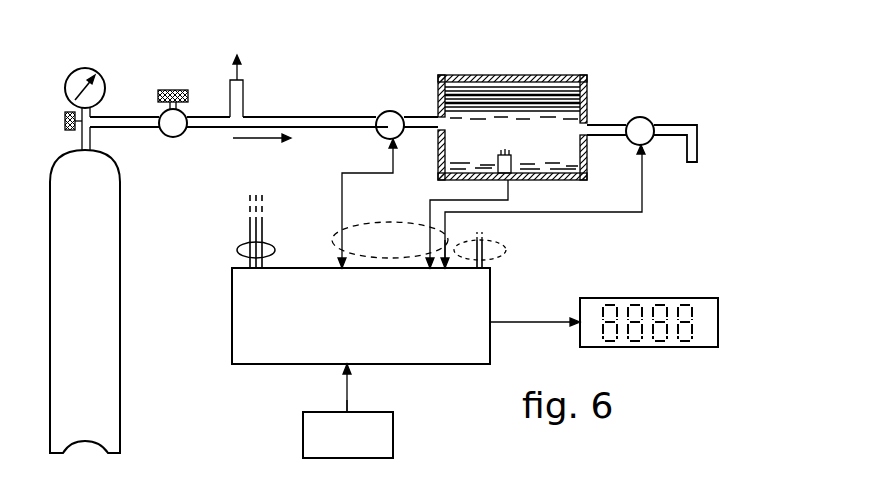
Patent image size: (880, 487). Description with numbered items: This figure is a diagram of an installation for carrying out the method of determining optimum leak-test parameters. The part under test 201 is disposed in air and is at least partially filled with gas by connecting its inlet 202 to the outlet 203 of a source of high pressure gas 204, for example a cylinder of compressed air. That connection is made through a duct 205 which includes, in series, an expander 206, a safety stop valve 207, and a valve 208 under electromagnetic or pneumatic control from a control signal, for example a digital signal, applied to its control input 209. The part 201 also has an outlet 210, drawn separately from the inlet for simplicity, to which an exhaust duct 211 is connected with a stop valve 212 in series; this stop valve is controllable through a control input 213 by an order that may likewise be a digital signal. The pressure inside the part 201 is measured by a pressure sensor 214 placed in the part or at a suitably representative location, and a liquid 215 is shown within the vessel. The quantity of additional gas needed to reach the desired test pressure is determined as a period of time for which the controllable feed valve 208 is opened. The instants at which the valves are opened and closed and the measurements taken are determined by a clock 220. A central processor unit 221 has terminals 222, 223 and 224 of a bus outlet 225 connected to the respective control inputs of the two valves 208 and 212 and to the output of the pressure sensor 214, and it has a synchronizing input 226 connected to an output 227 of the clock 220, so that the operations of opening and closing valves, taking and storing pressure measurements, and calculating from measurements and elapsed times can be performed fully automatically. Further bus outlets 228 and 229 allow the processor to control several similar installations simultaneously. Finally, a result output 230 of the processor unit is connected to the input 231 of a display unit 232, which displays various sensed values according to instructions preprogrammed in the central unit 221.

The part under test 201 is at (528, 58).
The inlet 202 is at (440, 117).
The outlet from the source of high pressure gas 203 is at (97, 117).
The source of high pressure gas 204 is at (110, 240).
The duct 205 is at (330, 100).
The expander 206 is at (100, 45).
The safety stop valve 207 is at (180, 130).
The valve 208 is at (390, 111).
The control input 209 is at (388, 146).
The outlet 210 is at (590, 125).
The exhaust duct 211 is at (684, 132).
The stop valve 212 is at (637, 145).
The control input 213 is at (644, 150).
The pressure sensor 214 is at (510, 178).
The liquid 215 is at (524, 134).
The clock 220 is at (316, 436).
The central processor unit 221 is at (243, 318).
The terminal 222 is at (340, 266).
The terminal 223 is at (448, 264).
The terminal 224 is at (390, 240).
The bus outlet 225 is at (335, 238).
The synchronizing input 226 is at (354, 372).
The output from the clock 227 is at (345, 408).
The bus outlet 228 is at (240, 248).
The bus outlet 229 is at (500, 242).
The result output 230 is at (492, 334).
The input of the display unit 231 is at (574, 320).
The display unit 232 is at (698, 283).